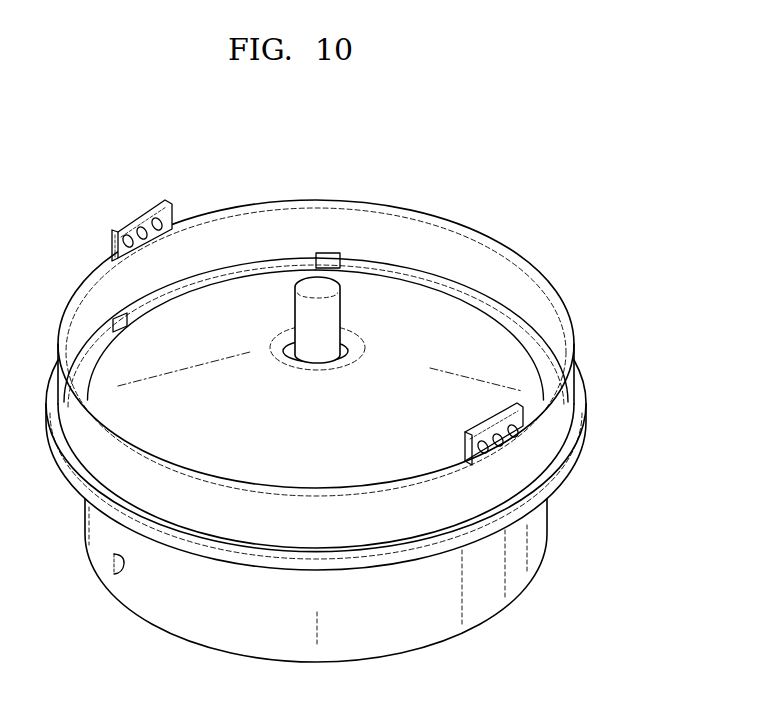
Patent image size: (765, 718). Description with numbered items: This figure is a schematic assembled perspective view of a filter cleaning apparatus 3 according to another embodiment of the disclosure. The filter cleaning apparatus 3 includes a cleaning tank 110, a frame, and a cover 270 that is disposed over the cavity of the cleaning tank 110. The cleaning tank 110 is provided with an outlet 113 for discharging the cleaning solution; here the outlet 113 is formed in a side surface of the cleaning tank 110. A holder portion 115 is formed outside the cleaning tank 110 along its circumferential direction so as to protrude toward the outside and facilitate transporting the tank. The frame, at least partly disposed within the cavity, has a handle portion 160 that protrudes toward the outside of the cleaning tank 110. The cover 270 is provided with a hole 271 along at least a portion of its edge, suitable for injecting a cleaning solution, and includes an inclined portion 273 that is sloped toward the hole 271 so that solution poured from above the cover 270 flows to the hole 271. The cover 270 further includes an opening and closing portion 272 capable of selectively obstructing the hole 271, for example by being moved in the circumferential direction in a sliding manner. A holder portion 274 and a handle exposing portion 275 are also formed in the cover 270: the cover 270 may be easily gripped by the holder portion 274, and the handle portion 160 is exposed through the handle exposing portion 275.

The filter cleaning apparatus 3 is at (497, 145).
The cleaning tank 110 is at (566, 510).
The outlet 113 is at (112, 566).
The holder portion 115 is at (581, 403).
The handle portion 160 is at (323, 283).
The cover 270 is at (196, 203).
The hole 271 is at (92, 357).
The opening and closing portion 272 is at (523, 323).
The inclined portion 273 is at (241, 300).
The holder portion 274 is at (120, 224).
The handle exposing portion 275 is at (346, 346).